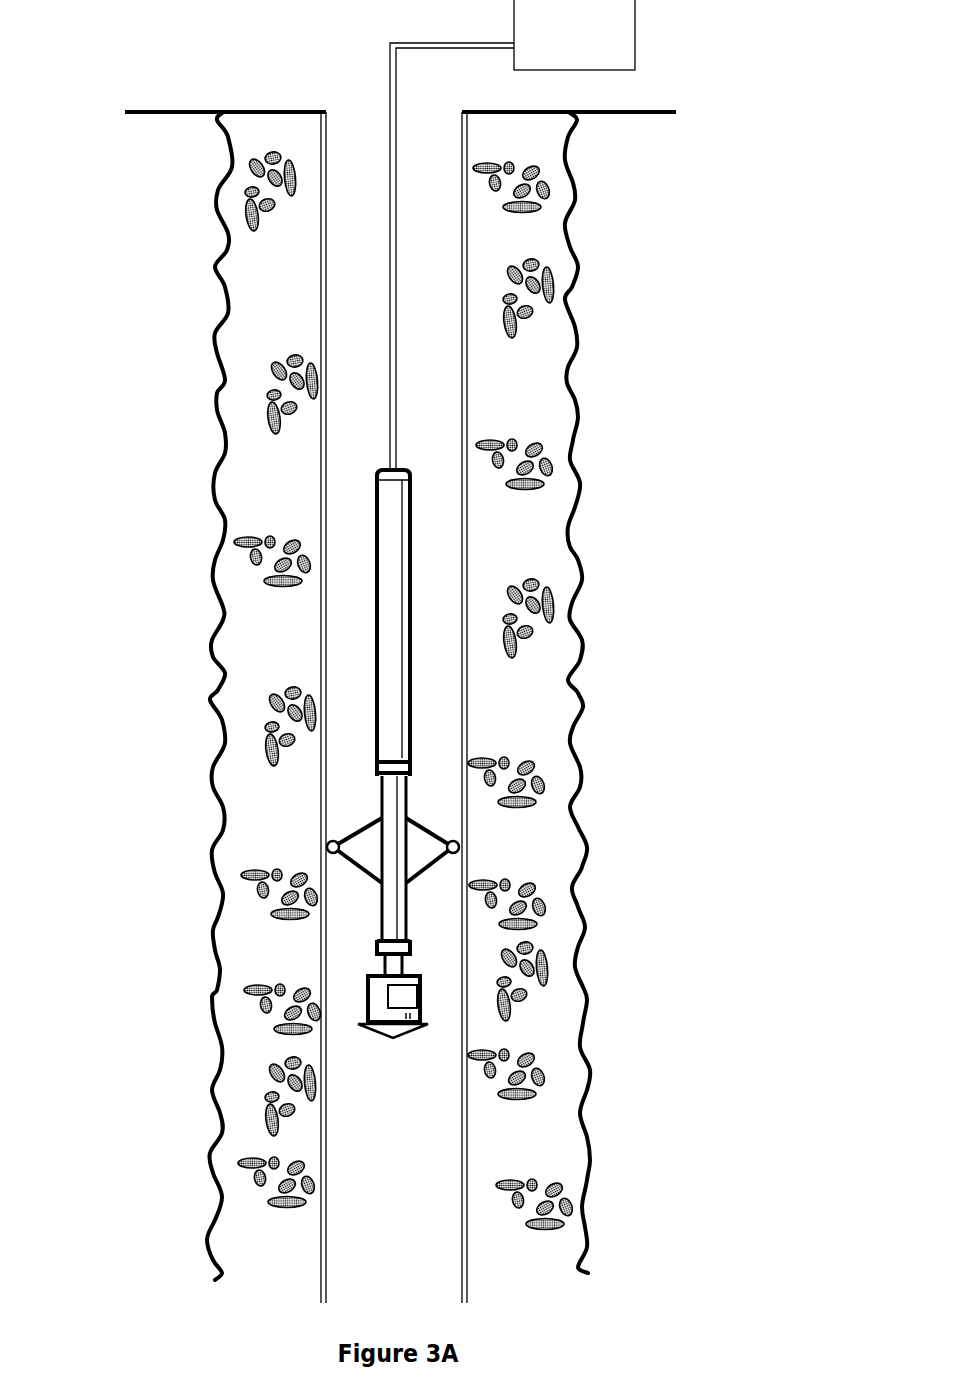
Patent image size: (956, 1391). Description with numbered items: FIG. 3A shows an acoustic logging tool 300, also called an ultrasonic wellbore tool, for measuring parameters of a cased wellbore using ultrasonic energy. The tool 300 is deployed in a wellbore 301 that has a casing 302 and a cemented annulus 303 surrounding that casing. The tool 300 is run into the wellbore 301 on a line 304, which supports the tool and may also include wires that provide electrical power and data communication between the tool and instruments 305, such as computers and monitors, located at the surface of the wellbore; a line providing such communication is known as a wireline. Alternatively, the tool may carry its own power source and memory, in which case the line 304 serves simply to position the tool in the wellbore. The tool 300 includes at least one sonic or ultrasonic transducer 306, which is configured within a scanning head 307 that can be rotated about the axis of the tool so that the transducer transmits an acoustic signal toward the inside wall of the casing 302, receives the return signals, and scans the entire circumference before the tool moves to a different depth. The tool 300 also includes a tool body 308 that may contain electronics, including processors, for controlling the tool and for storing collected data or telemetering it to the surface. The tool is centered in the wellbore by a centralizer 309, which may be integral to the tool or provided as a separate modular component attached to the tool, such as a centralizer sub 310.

The acoustic logging tool 300 is at (437, 731).
The wellbore 301 is at (326, 84).
The casing 302 is at (463, 600).
The cemented annulus 303 is at (552, 378).
The line 304 is at (395, 132).
The instruments 305 is at (574, 35).
The ultrasonic transducer 306 is at (420, 1005).
The scanning head 307 is at (367, 995).
The tool body 308 is at (377, 600).
The centralizer 309 is at (430, 827).
The centralizer sub 310 is at (407, 903).